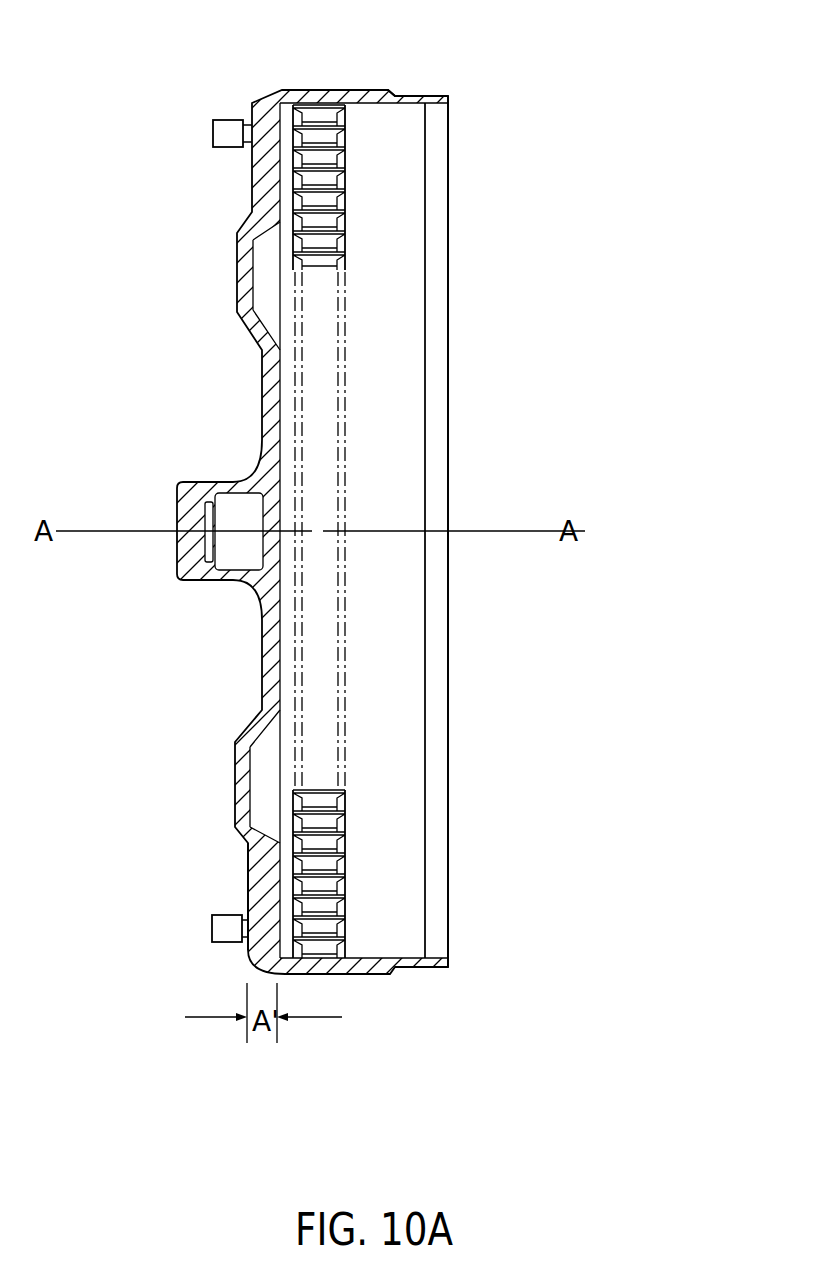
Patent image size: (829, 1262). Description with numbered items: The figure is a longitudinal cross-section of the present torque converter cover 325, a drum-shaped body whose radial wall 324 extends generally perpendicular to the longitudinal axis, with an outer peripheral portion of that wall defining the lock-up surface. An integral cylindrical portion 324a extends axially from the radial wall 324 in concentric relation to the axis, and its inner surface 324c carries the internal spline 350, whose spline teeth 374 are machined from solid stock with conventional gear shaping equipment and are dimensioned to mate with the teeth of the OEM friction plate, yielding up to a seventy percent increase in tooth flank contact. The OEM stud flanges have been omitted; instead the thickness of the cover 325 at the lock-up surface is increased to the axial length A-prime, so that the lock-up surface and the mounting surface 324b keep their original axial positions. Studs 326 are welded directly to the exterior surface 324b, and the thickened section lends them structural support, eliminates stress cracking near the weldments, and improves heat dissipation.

The radial wall 324 is at (237, 298).
The cylindrical portion 324a is at (335, 90).
The exterior surface 324b is at (248, 882).
The inner surface 324c is at (373, 103).
The cover 325 is at (552, 283).
The studs 326 is at (213, 131).
The internal spline 350 is at (377, 825).
The spline teeth 374 is at (330, 265).